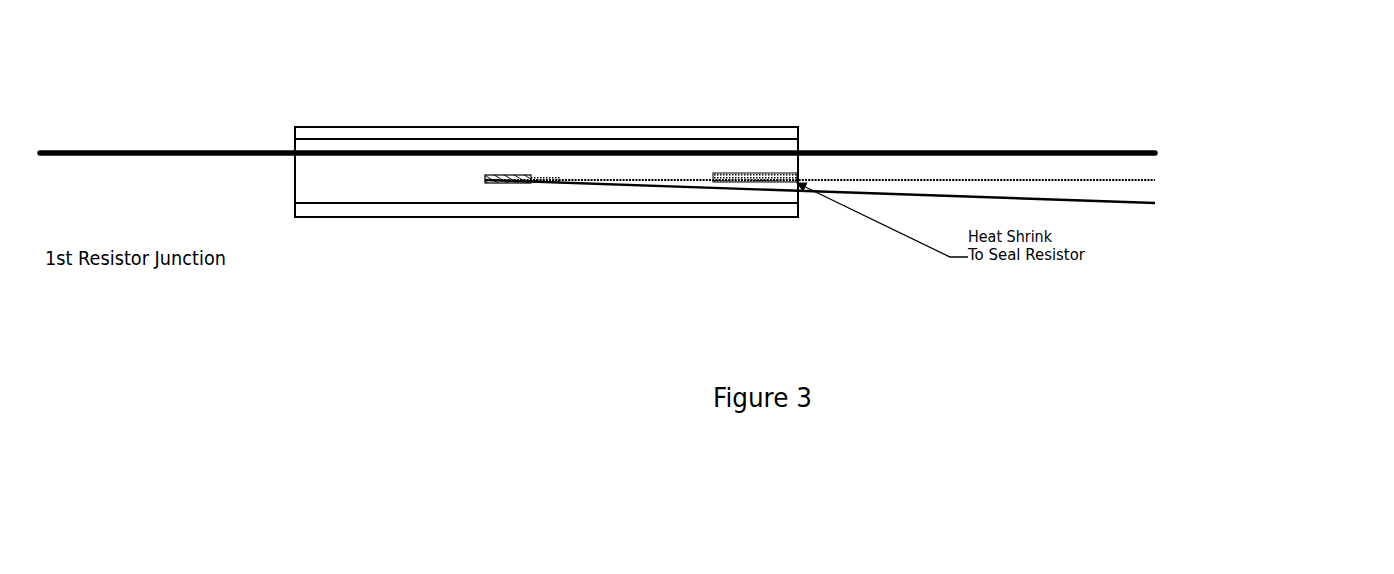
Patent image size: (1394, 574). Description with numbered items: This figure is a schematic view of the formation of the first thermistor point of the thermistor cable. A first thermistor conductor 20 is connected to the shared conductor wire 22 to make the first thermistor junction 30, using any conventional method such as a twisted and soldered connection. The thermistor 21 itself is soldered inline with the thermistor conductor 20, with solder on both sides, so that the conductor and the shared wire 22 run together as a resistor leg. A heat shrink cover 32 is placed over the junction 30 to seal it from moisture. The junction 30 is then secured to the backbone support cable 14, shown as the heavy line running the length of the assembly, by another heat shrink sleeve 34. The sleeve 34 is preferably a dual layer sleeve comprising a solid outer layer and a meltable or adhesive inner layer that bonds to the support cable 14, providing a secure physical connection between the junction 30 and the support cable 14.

The backbone support cable 14 is at (597, 94).
The heat shrink sleeve 34 is at (546, 111).
The thermistor junction 30 is at (623, 91).
The resistor (soldered on both sides) 21 is at (870, 105).
The thermistor conductor 20 is at (871, 124).
The shared thermistor conductor 22 is at (925, 185).
The heat shrink cover 32 is at (652, 238).